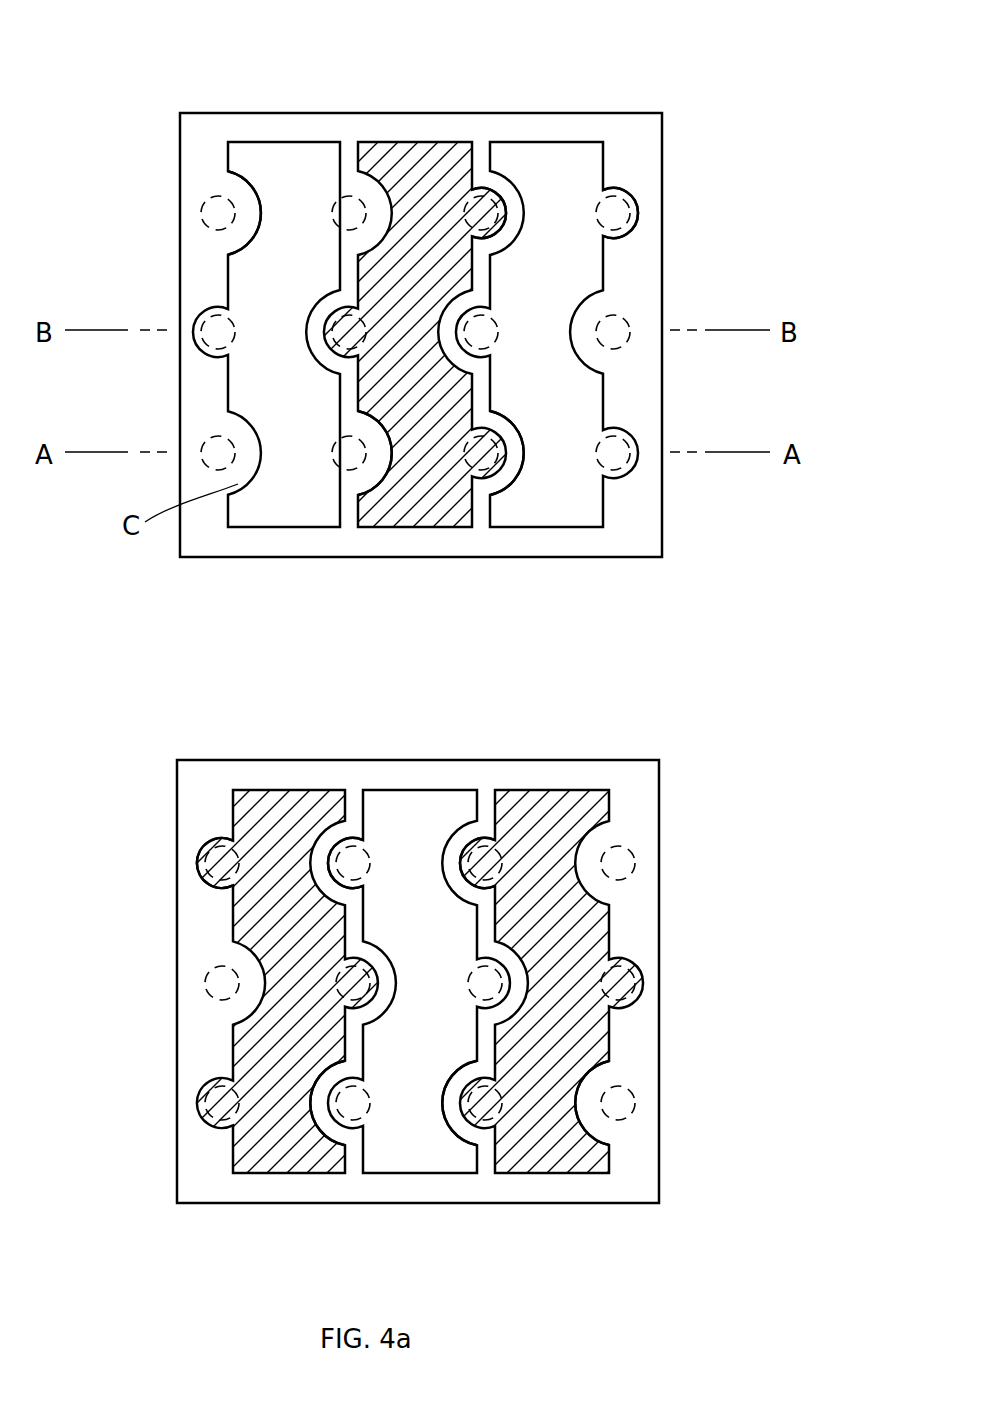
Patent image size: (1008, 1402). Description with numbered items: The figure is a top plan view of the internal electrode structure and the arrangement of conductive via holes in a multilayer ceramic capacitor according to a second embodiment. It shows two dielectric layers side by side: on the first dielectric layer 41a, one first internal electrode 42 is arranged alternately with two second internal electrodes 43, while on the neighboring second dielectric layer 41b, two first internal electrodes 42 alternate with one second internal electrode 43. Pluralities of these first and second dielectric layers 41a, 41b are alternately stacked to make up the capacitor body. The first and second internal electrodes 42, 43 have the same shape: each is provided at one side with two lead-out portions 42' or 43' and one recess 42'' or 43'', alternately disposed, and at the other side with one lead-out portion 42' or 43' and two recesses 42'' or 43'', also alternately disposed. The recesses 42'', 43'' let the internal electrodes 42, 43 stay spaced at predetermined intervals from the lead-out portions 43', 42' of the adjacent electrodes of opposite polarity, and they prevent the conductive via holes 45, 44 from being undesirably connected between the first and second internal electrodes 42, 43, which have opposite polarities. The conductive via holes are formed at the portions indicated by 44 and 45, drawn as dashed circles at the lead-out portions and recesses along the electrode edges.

The first dielectric layer 41a is at (662, 205).
The second dielectric layer 41b is at (659, 1150).
The first internal electrode 42 is at (420, 610).
The lead-out portion 42' is at (311, 451).
The recess 42'' is at (448, 838).
The second internal electrode 43 is at (415, 610).
The lead-out portion 43' is at (495, 454).
The recess 43'' is at (322, 687).
The conductive via hole 44 is at (202, 206).
The conductive via hole 45 is at (198, 350).